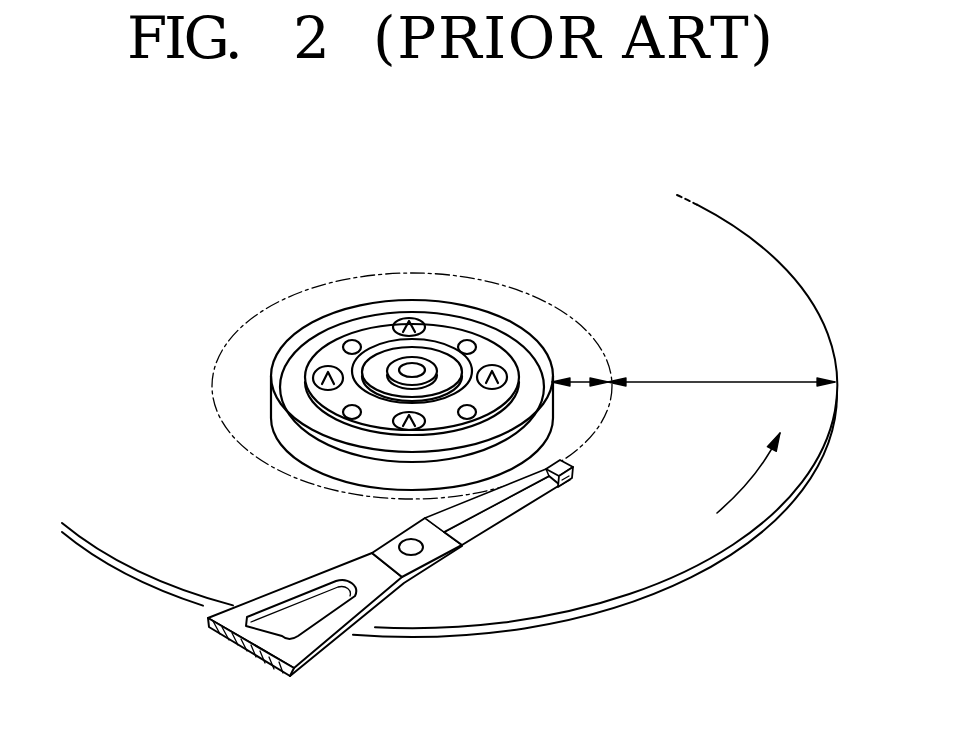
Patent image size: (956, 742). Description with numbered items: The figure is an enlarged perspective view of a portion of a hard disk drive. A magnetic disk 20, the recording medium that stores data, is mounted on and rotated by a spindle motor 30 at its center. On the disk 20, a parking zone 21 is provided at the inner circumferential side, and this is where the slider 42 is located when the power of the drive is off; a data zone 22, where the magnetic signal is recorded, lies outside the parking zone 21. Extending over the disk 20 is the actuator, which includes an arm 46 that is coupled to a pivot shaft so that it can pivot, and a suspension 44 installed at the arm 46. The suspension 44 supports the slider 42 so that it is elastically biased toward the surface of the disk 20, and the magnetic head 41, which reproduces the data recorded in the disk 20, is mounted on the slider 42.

The magnetic disk 20 is at (613, 575).
The parking zone 21 is at (582, 380).
The data zone 22 is at (710, 380).
The spindle motor 30 is at (443, 328).
The magnetic head 41 is at (567, 483).
The slider 42 is at (558, 487).
The suspension 44 is at (465, 520).
The arm 46 is at (315, 578).